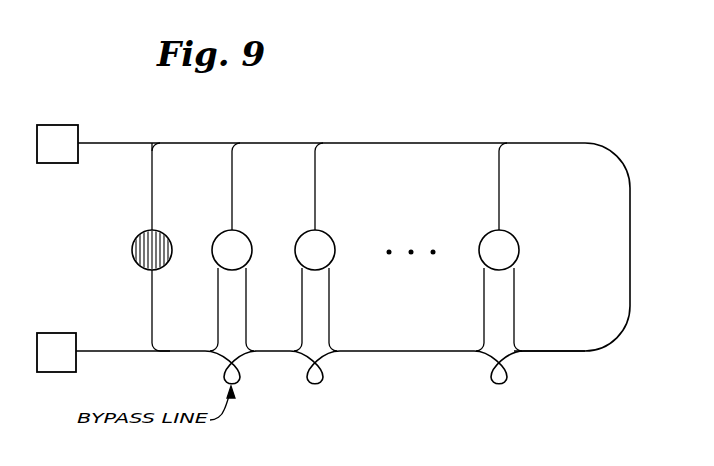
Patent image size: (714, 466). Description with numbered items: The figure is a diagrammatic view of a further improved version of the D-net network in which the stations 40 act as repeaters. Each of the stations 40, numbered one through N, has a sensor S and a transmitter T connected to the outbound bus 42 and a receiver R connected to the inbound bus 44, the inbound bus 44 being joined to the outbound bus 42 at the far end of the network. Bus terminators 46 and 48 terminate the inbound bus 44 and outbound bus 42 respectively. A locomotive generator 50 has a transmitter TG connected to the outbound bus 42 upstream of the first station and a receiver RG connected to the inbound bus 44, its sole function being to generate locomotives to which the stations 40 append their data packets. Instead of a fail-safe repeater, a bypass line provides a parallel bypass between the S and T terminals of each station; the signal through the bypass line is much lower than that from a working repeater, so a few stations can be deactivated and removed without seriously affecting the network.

The stations 40 is at (247, 238).
The outbound bus 42 is at (413, 351).
The inbound bus 44 is at (463, 143).
The bus terminator 46 is at (56, 163).
The bus terminator 48 is at (68, 333).
The locomotive generator 50 is at (132, 248).